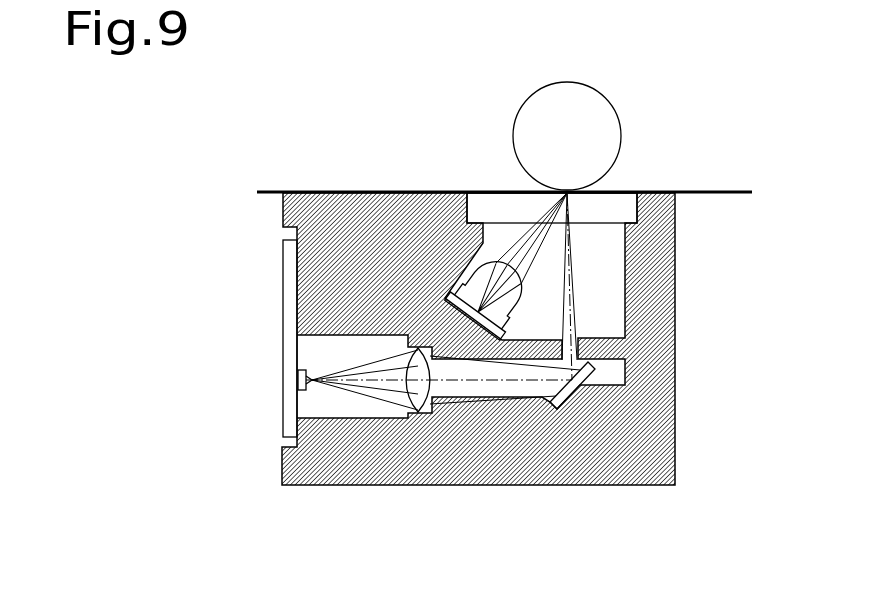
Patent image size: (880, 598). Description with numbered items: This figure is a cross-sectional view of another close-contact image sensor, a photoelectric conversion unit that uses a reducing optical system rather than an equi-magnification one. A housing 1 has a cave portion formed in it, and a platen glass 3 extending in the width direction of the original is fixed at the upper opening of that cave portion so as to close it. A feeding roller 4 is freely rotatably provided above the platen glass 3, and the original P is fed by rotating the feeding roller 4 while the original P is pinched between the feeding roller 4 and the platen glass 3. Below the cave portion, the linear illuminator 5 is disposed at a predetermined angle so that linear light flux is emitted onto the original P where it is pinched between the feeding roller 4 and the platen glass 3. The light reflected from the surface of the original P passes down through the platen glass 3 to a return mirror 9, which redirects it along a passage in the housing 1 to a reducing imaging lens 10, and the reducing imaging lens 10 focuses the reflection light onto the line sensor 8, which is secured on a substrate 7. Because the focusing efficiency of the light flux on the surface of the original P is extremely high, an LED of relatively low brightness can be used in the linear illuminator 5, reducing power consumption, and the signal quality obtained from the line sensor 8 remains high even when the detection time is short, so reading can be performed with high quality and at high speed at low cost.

The housing 1 is at (677, 296).
The platen glass 3 is at (610, 207).
The feeding roller 4 is at (575, 97).
The linear illuminator 5 is at (462, 284).
The substrate 7 is at (283, 292).
The line sensor 8 is at (298, 388).
The return mirror 9 is at (598, 364).
The reducing imaging lens 10 is at (412, 414).
The original P is at (285, 192).